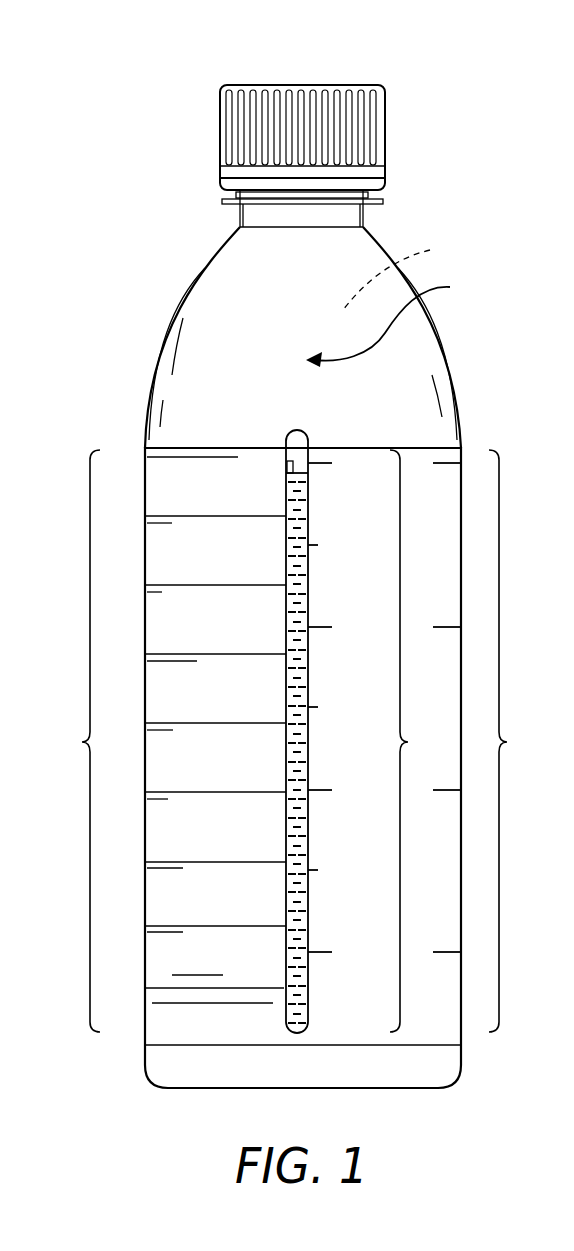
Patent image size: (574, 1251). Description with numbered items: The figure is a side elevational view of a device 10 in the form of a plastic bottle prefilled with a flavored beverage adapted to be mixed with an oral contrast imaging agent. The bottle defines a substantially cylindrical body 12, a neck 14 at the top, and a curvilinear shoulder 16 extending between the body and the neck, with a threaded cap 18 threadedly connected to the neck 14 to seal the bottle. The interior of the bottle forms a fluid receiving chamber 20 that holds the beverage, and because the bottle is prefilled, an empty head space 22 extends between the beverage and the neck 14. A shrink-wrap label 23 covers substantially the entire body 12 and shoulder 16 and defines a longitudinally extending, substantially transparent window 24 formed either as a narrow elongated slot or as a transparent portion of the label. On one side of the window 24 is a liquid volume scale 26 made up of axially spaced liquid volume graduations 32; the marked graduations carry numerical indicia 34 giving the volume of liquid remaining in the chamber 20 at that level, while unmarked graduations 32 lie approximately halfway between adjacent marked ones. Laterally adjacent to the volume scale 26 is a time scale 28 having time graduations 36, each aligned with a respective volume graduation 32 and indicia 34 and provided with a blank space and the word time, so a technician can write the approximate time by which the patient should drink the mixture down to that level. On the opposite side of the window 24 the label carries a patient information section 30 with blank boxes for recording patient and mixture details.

The device 10 is at (462, 52).
The cylindrical body 12 is at (145, 951).
The neck 14 is at (363, 216).
The curvilinear shoulder 16 is at (198, 278).
The threaded cap 18 is at (220, 108).
The fluid receiving chamber 20 is at (288, 443).
The empty head space 22 is at (397, 275).
The label 23 is at (388, 321).
The transparent window 24 is at (292, 694).
The liquid volume scale 26 is at (412, 741).
The time scale 28 is at (512, 741).
The patient information section 30 is at (75, 741).
The liquid volume graduations 32 is at (325, 790).
The numerical indicia 34 is at (367, 803).
The time graduations 36 is at (447, 463).